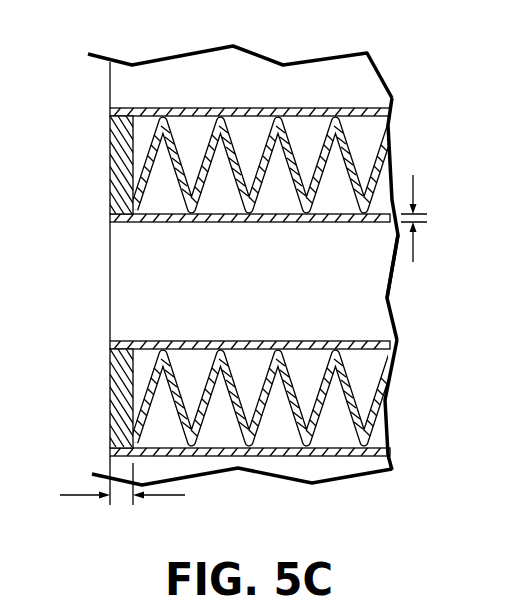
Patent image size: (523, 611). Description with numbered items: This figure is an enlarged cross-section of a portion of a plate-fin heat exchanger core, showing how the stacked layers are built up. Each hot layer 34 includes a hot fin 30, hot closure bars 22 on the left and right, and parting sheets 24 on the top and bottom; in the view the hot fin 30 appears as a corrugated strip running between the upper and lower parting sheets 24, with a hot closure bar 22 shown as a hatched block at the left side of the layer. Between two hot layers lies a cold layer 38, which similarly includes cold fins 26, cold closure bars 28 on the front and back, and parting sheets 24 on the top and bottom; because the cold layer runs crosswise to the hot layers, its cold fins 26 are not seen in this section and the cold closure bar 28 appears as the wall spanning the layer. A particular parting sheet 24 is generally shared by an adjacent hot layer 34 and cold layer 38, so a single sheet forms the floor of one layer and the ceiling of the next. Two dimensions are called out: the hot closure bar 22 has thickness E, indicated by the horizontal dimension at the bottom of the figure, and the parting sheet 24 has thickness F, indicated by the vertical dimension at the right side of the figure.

The hot closure bar 22 is at (117, 152).
The parting sheet 24 is at (120, 217).
The cold fins 26 is at (122, 296).
The cold closure bar 28 is at (157, 78).
The hot fin 30 is at (350, 163).
The hot layer 34 is at (405, 416).
The cold layer 38 is at (420, 305).
The thickness of hot closure bar E is at (122, 485).
The thickness of parting sheet F is at (417, 216).